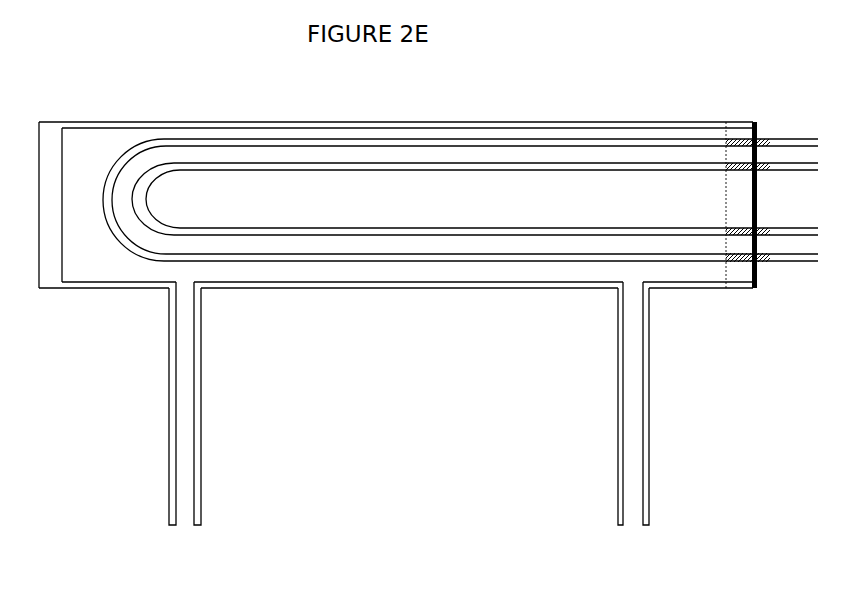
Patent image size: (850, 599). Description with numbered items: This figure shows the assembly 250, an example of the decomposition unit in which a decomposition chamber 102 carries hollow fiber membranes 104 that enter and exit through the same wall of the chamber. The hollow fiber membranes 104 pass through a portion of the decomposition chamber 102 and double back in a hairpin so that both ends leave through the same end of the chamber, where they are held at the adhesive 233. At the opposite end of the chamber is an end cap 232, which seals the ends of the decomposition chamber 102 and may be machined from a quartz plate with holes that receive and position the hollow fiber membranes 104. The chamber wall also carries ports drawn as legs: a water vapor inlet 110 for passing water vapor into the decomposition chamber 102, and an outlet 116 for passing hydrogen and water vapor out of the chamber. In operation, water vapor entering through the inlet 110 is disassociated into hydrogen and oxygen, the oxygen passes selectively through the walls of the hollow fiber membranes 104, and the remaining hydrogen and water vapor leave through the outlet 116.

The assembly 250 is at (235, 93).
The decomposition chamber 102 is at (292, 290).
The hollow fiber membranes 104 is at (532, 141).
The water vapor inlet 110 is at (649, 443).
The outlet 116 is at (168, 485).
The end cap 232 is at (75, 268).
The adhesive 233 is at (758, 264).